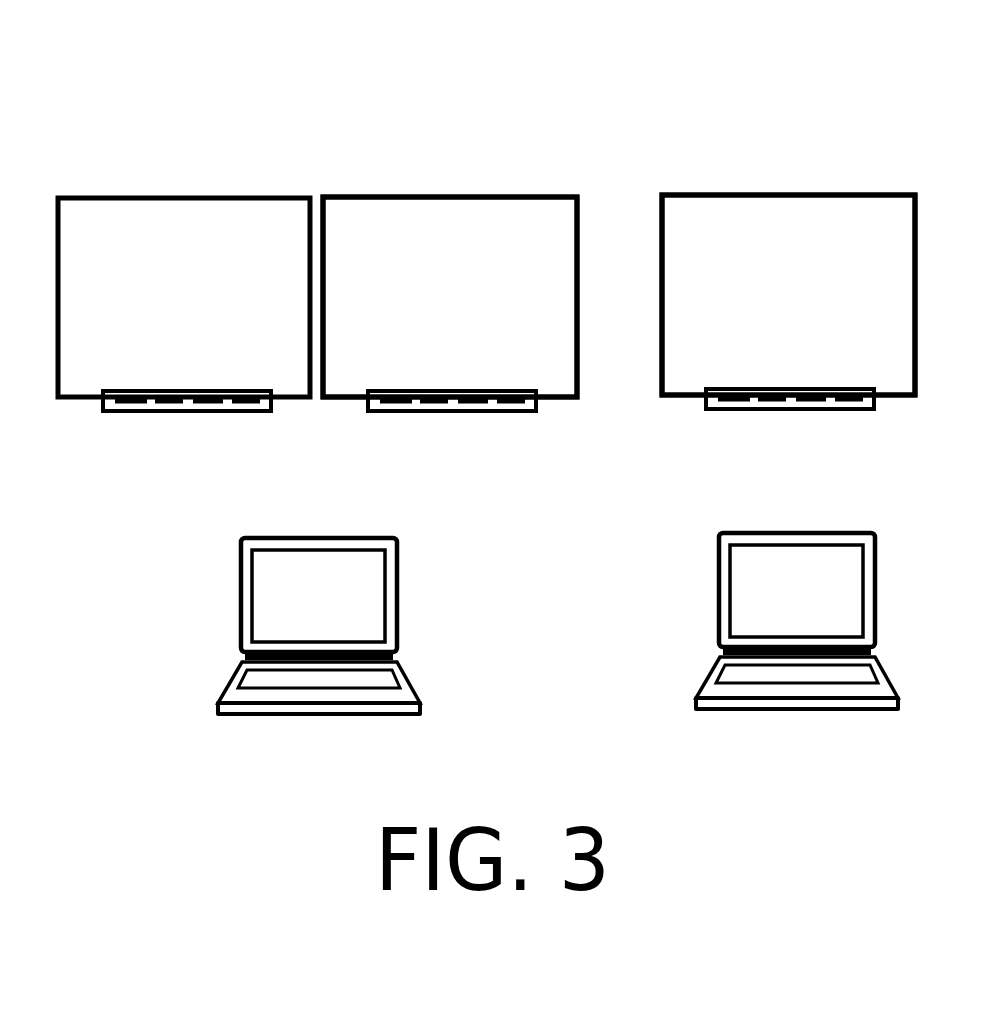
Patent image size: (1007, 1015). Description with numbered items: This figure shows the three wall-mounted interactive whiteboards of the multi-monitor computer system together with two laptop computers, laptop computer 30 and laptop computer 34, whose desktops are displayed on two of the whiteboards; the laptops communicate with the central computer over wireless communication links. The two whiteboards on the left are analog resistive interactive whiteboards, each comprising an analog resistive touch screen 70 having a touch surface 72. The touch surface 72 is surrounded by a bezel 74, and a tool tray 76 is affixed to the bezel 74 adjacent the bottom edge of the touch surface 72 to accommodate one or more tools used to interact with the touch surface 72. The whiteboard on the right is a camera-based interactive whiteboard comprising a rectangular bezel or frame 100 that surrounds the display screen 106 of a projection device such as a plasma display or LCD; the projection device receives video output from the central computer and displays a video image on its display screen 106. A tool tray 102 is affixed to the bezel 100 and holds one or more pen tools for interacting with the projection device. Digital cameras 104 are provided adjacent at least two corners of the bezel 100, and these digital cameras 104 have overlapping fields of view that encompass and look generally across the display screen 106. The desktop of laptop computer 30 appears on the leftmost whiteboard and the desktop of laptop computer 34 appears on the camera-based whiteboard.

The laptop computer 30 is at (269, 690).
The laptop computer 34 is at (822, 688).
The analog resistive touch screen 70 is at (566, 192).
The touch surface 72 is at (145, 238).
The bezel 74 is at (578, 240).
The tool tray 76 is at (152, 402).
The bezel or frame 100 is at (802, 192).
The tool tray 102 is at (712, 410).
The digital cameras 104 is at (913, 192).
The display screen 106 is at (720, 242).